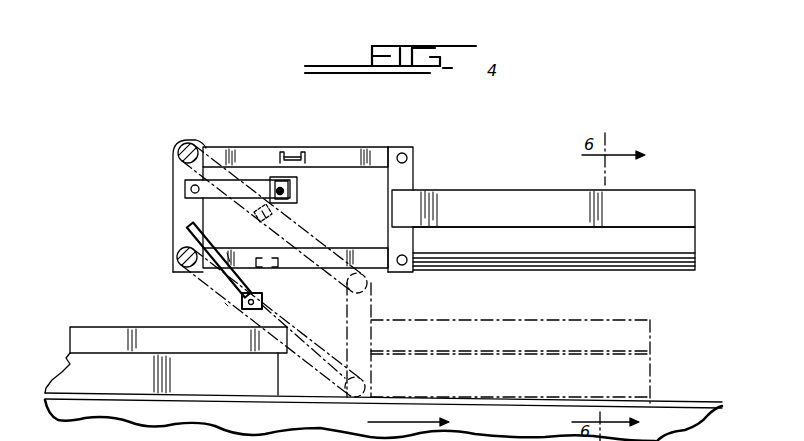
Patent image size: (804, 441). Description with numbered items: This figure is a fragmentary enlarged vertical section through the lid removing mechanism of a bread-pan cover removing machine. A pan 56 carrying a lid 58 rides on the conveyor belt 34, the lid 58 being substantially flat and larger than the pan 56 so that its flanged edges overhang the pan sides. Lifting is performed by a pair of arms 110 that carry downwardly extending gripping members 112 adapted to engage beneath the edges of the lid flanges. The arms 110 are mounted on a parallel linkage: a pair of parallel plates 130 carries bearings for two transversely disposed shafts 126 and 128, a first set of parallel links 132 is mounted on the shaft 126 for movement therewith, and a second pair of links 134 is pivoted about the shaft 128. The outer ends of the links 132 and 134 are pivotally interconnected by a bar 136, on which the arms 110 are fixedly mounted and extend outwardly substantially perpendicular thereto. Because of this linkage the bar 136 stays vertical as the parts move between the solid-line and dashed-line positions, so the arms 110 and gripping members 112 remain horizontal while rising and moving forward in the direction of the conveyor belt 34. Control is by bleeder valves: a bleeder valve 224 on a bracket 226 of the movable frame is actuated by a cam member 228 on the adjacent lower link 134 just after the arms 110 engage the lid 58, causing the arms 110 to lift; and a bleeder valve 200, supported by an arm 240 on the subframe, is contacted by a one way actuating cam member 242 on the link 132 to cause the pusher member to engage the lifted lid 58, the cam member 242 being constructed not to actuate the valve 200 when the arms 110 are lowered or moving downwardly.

The conveyor belt 34 is at (665, 403).
The pan 56 is at (78, 380).
The lid 58 is at (108, 340).
The arms 110 is at (515, 215).
The gripping members 112 is at (688, 248).
The shaft 126 is at (196, 143).
The shaft 128 is at (178, 256).
The parallel plates 130 is at (187, 215).
The parallel links 132 is at (255, 152).
The links 134 is at (237, 237).
The bar 136 is at (407, 180).
The bleeder valve 200 is at (300, 190).
The bleeder valve 224 is at (263, 302).
The bracket 226 is at (225, 275).
The cam member 228 is at (265, 270).
The arm 240 is at (207, 180).
The one way actuating cam member 242 is at (290, 151).